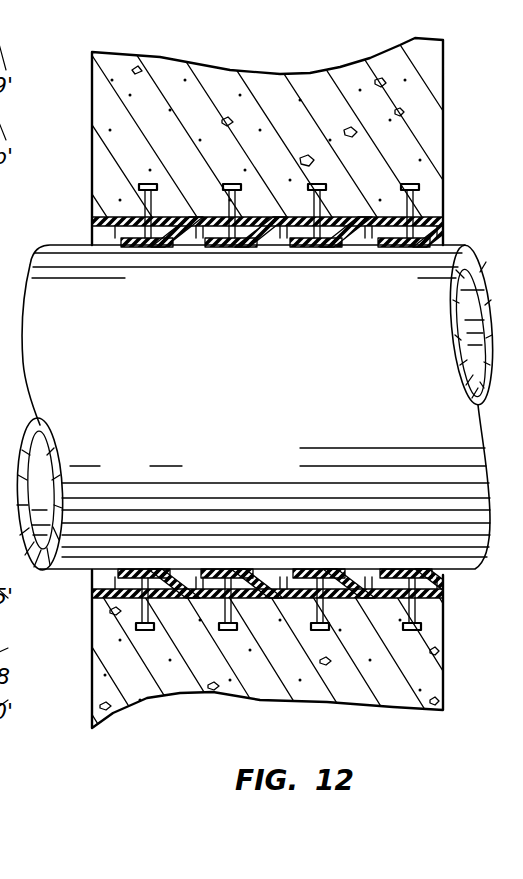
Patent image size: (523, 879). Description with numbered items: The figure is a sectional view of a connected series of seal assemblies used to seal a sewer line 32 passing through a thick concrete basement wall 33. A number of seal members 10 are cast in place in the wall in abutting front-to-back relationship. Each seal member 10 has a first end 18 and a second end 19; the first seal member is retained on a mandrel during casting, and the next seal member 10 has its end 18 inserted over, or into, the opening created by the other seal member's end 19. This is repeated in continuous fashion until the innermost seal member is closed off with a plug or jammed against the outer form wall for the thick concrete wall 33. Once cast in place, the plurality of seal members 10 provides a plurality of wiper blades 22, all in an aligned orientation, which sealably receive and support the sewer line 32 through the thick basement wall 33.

The seal member 10 is at (125, 606).
The first end 18 is at (282, 215).
The second end 19 is at (340, 268).
The wiper blades 22 is at (398, 284).
The sewer line 32 is at (440, 297).
The thick basement wall 33 is at (432, 80).